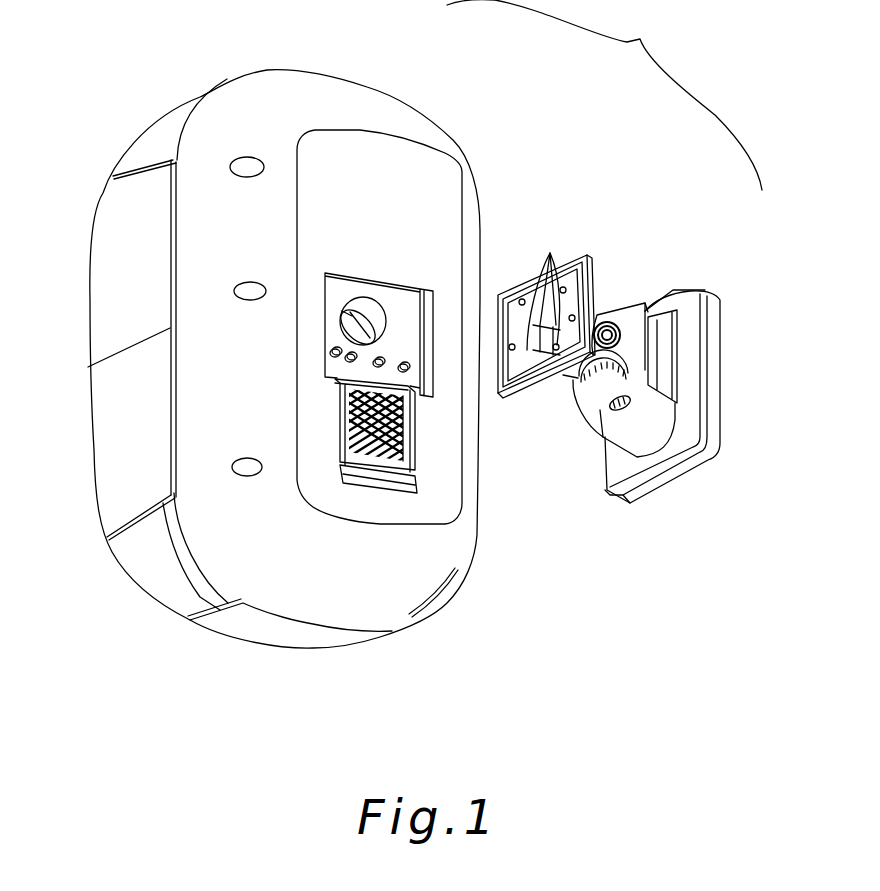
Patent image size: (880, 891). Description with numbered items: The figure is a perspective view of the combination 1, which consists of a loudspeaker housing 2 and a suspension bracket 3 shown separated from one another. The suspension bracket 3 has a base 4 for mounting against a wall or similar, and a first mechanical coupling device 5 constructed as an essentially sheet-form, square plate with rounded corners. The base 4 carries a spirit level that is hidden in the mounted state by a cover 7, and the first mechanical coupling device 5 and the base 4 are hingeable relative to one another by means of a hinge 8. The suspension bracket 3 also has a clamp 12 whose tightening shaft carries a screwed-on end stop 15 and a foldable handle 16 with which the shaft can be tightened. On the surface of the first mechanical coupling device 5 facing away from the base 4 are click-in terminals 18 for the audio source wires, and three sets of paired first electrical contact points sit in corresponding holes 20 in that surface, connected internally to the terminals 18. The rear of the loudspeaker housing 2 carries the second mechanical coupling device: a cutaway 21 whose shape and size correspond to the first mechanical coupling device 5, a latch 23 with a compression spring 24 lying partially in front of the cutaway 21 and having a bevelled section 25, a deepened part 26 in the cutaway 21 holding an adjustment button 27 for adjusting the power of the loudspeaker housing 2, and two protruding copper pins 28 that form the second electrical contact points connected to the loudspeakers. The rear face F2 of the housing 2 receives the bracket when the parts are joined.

The combination 1 is at (604, 95).
The loudspeaker housing 2 is at (449, 57).
The suspension bracket 3 is at (697, 199).
The front face of housing F2 is at (455, 194).
The base 4 is at (667, 388).
The first mechanical coupling device 5 is at (563, 375).
The cover 7 is at (713, 420).
The hinge 8 is at (616, 312).
The clamp 12 is at (647, 304).
The end stop 15 is at (603, 408).
The foldable handle 16 is at (665, 360).
The click-in terminals 18 is at (557, 345).
The holes 20 is at (557, 243).
The cutaway 21 is at (390, 315).
The latch 23 is at (341, 406).
The compression spring 24 is at (341, 451).
The bevelled section 25 is at (403, 393).
The deepened part 26 is at (395, 322).
The adjustment button 27 is at (342, 311).
The protruding copper pins 28 is at (405, 372).